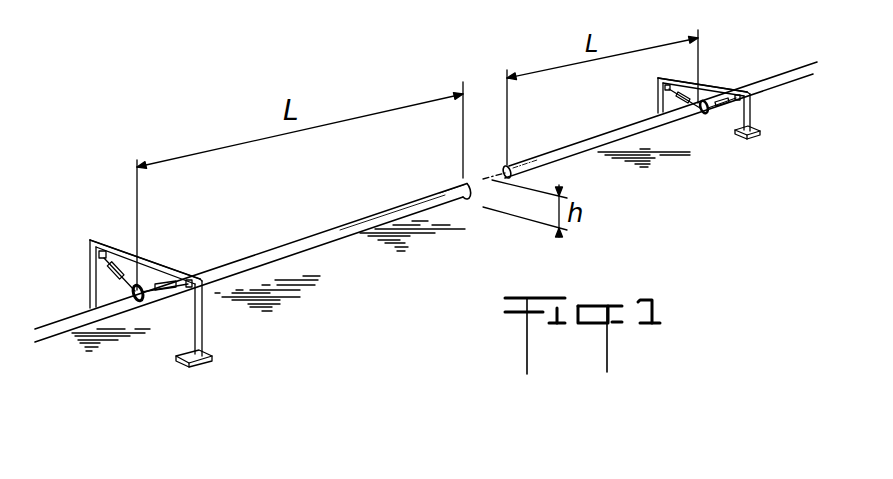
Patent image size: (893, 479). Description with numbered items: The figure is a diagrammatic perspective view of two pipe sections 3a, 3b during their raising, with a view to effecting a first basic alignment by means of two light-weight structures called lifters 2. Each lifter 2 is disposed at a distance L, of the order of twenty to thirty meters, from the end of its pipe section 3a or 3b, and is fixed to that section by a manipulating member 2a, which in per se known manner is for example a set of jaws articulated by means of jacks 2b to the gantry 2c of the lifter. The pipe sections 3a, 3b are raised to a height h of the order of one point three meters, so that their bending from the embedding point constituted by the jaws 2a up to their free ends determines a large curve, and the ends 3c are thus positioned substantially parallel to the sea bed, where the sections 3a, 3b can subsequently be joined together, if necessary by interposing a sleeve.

The lifter 2 is at (106, 233).
The manipulating member 2a is at (140, 306).
The jack 2b is at (116, 268).
The gantry 2c is at (165, 268).
The pipe section 3a is at (306, 237).
The pipe section 3b is at (633, 133).
The pipe section end 3c is at (447, 183).